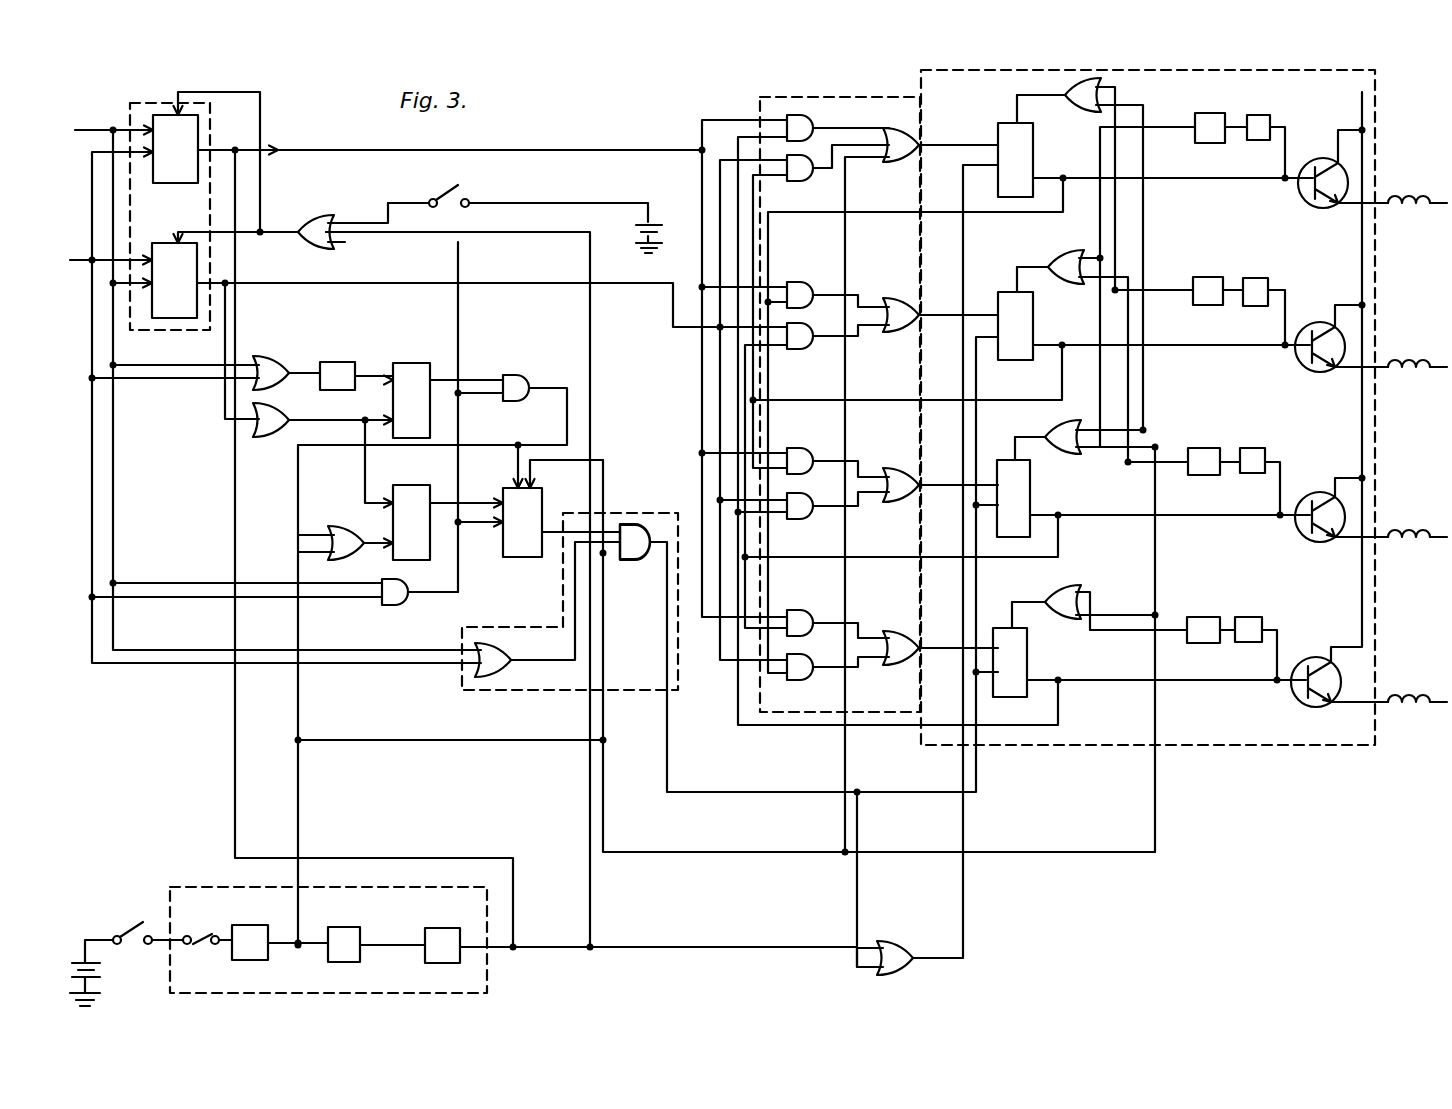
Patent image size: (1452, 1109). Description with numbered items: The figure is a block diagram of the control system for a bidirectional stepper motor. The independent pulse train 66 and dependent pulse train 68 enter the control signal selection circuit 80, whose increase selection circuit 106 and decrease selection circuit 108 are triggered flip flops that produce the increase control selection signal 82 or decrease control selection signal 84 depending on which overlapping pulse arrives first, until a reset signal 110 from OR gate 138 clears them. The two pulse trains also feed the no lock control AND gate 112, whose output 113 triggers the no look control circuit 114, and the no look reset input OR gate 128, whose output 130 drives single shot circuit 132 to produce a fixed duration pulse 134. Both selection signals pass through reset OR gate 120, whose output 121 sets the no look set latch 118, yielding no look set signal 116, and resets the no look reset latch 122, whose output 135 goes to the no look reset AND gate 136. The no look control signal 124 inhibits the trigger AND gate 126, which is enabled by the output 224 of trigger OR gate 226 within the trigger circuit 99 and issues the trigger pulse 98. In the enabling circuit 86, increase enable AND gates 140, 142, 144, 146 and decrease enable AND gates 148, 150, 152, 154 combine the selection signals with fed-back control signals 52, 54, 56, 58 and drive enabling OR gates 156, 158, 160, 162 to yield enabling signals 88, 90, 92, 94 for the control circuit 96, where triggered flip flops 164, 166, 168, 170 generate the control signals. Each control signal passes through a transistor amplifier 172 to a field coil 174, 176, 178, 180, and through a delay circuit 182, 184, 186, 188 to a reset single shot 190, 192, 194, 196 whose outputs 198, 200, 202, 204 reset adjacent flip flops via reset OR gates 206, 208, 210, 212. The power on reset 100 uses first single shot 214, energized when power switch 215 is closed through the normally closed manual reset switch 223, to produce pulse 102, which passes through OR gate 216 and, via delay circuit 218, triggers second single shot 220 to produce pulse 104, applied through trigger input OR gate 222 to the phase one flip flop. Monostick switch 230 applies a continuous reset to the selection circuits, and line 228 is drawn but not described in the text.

The phase 1 control signal 52 is at (868, 214).
The phase 2 control signal 54 is at (858, 402).
The phase 3 control signal 56 is at (858, 559).
The phase 4 control signal 58 is at (858, 727).
The independent pulse train 66 is at (70, 258).
The dependent pulse train 68 is at (112, 123).
The control signal selection circuit 80 is at (157, 101).
The increase control selection signal 82 is at (587, 150).
The decrease control selection signal 84 is at (540, 290).
The enabling circuit 86 is at (758, 108).
The control enabling signal 88 is at (950, 143).
The control enabling signal 90 is at (945, 313).
The control enabling signal 92 is at (945, 483).
The control enabling signal 94 is at (945, 647).
The control circuit 96 is at (1380, 102).
The trigger pulse 98 is at (742, 792).
The trigger circuit 99 is at (634, 508).
The power on reset 100 is at (204, 885).
The output of the single shot 102 is at (332, 740).
The pulse 104 is at (585, 920).
The increase selection circuit 106 is at (160, 184).
The decrease selection circuit 108 is at (152, 320).
The reset signal 110 is at (305, 232).
The no lock control AND gate 112 is at (395, 610).
The output of no look control AND gate 113 is at (460, 555).
The no look control circuit 114 is at (548, 560).
The no look set signal 116 is at (474, 498).
The no look set latch 118 is at (408, 484).
The reset OR gate 120 is at (268, 438).
The output of reset OR gate 121 is at (345, 420).
The no look reset latch 122 is at (428, 362).
The no look control signal 124 is at (558, 505).
The trigger AND gate 126 is at (645, 565).
The no look reset input OR gate 128 is at (266, 358).
The output of OR gate 128 130 is at (305, 352).
The single shot circuit 132 is at (335, 360).
The fixed duration pulse 134 is at (373, 355).
The output of no look reset latch 135 is at (470, 380).
The no look reset AND gate 136 is at (527, 375).
The OR gate 138 is at (318, 215).
The phase 1 increase enable AND gate 140 is at (815, 123).
The phase 2 increase enable AND gate 142 is at (805, 282).
The phase 3 increase enable AND gate 144 is at (810, 438).
The phase 4 increase enable AND gate 146 is at (805, 610).
The phase 1 decrease enable AND gate 148 is at (800, 178).
The phase 2 decrease enable AND gate 150 is at (805, 350).
The phase 3 decrease enable AND gate 152 is at (805, 520).
The phase 4 decrease enable AND gate 154 is at (805, 681).
The enabling OR gate 156 is at (895, 163).
The enabling OR gate 158 is at (898, 333).
The enabling OR gate 160 is at (898, 502).
The enabling OR gate 162 is at (898, 665).
The phase 1 control signal triggered flip flop 164 is at (1047, 146).
The phase 2 control signal triggered flip flop 166 is at (1036, 340).
The phase 3 control signal triggered flip flop 168 is at (1032, 508).
The phase 4 control signal triggered flip flop 170 is at (1041, 649).
The transistor amplifier 172 is at (1305, 210).
The stepping motor field coil 174 is at (1410, 200).
The stepping motor field coil 176 is at (1408, 363).
The stepping motor field coil 178 is at (1410, 533).
The stepping motor field coil 180 is at (1410, 698).
The delay circuit 182 is at (1258, 114).
The delay circuit 184 is at (1255, 277).
The delay circuit 186 is at (1252, 447).
The delay circuit 188 is at (1250, 616).
The reset single shot 190 is at (1185, 140).
The reset single shot 192 is at (1205, 306).
The reset single shot 194 is at (1203, 476).
The reset single shot 196 is at (1203, 644).
The output of reset single shot 198 is at (1178, 123).
The output of reset single shot 200 is at (1175, 285).
The output of reset single shot 202 is at (1178, 445).
The output of reset single shot 204 is at (1175, 615).
The reset OR gate 206 is at (1085, 110).
The reset OR gate 208 is at (1055, 260).
The reset OR gate 210 is at (1052, 435).
The reset OR gate 212 is at (1048, 600).
The first single shot 214 is at (254, 925).
The power switch 215 is at (135, 918).
The OR gate 216 is at (337, 528).
The delay circuit 218 is at (344, 926).
The second single shot 220 is at (441, 927).
The trigger input OR gate 222 is at (905, 945).
The manual reset switch 223 is at (207, 950).
The output of trigger OR gate 224 is at (555, 690).
The trigger OR gate 226 is at (497, 618).
The line 228 is at (565, 425).
The monostick switch 230 is at (432, 198).